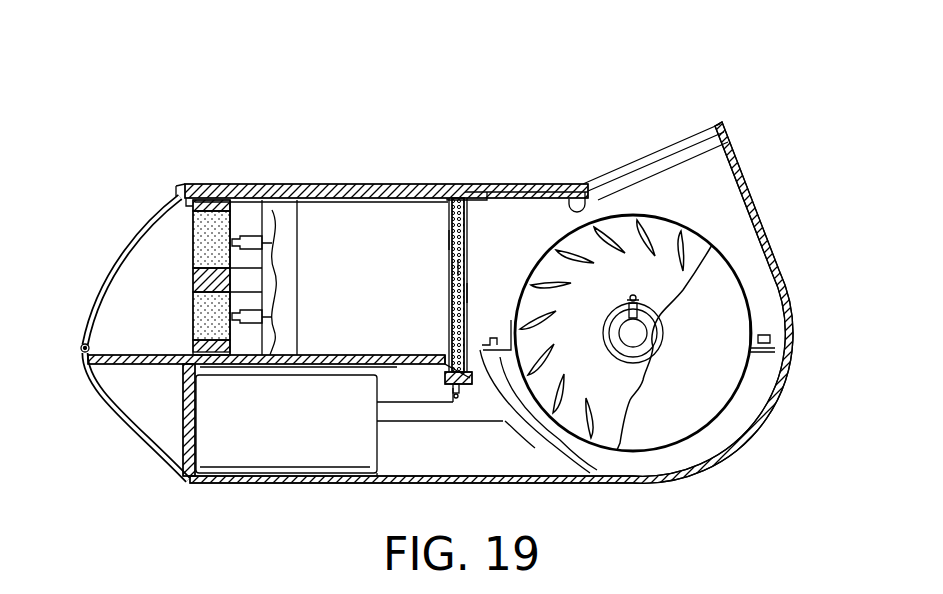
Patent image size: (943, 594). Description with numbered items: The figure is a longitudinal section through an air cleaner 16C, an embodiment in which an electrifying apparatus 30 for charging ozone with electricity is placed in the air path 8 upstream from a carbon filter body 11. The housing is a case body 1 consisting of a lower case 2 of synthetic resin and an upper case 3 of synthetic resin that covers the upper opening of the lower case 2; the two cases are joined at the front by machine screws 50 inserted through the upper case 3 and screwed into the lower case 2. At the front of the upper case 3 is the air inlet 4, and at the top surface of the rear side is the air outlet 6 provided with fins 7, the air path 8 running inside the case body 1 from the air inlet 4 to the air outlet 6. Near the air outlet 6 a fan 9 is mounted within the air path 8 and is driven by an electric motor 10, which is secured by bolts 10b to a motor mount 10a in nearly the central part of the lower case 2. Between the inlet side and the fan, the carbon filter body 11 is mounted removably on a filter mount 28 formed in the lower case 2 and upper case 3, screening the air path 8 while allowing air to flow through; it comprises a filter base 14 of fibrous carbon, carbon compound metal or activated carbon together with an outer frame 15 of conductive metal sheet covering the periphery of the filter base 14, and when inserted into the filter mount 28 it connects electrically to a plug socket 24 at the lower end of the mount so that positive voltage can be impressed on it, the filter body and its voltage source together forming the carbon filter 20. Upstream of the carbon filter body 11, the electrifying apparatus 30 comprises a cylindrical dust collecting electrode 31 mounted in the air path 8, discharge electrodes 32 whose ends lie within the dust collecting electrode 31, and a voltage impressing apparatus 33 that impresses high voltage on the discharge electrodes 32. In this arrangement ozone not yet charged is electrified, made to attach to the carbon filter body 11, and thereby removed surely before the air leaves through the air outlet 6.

The case body 1 is at (762, 197).
The lower case 2 is at (117, 410).
The upper case 3 is at (365, 183).
The air inlet 4 is at (110, 268).
The air outlet 6 is at (662, 150).
The fins 7 is at (639, 167).
The air path 8 is at (333, 237).
The fan 9 is at (617, 222).
The electric motor 10 is at (723, 280).
The motor mount 10a is at (750, 383).
The bolts 10b is at (763, 330).
The carbon filter body 11 is at (449, 268).
The filter base 14 is at (448, 293).
The partition plate layer 15 is at (447, 240).
The air cleaner 16C is at (762, 79).
The carbon filter 20 is at (470, 224).
The plug socket 24 is at (440, 372).
The filter mount 28 is at (467, 378).
The electrifying apparatus 30 is at (190, 303).
The dust collecting electrode 31 is at (208, 186).
The discharge electrodes 32 is at (218, 240).
The voltage impressing apparatus 33 is at (258, 460).
The machine screws 50 is at (80, 350).